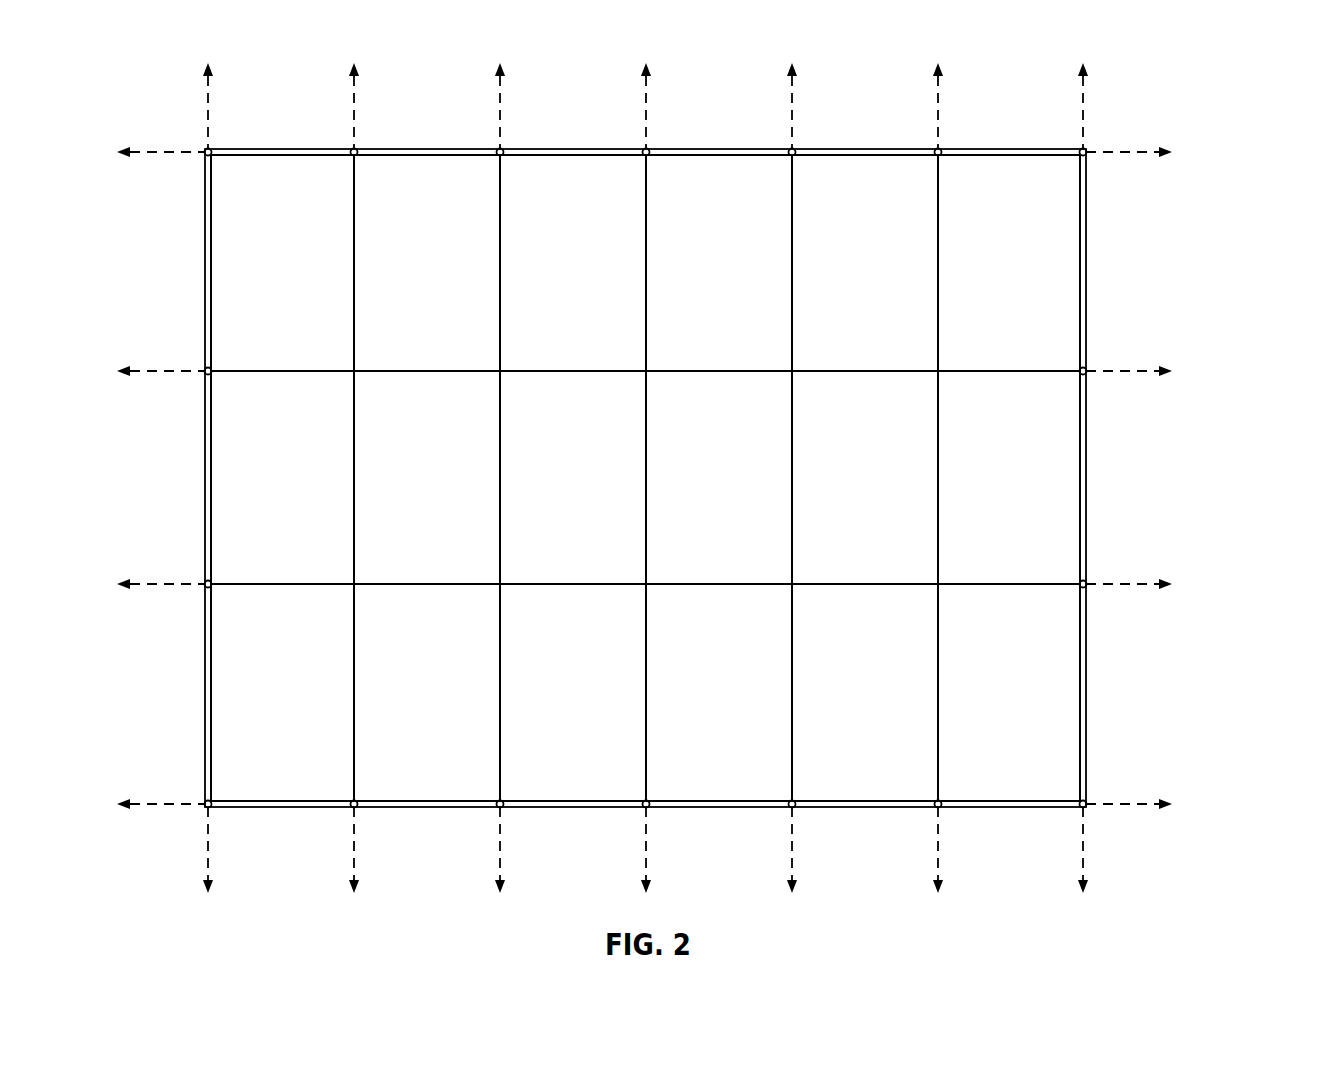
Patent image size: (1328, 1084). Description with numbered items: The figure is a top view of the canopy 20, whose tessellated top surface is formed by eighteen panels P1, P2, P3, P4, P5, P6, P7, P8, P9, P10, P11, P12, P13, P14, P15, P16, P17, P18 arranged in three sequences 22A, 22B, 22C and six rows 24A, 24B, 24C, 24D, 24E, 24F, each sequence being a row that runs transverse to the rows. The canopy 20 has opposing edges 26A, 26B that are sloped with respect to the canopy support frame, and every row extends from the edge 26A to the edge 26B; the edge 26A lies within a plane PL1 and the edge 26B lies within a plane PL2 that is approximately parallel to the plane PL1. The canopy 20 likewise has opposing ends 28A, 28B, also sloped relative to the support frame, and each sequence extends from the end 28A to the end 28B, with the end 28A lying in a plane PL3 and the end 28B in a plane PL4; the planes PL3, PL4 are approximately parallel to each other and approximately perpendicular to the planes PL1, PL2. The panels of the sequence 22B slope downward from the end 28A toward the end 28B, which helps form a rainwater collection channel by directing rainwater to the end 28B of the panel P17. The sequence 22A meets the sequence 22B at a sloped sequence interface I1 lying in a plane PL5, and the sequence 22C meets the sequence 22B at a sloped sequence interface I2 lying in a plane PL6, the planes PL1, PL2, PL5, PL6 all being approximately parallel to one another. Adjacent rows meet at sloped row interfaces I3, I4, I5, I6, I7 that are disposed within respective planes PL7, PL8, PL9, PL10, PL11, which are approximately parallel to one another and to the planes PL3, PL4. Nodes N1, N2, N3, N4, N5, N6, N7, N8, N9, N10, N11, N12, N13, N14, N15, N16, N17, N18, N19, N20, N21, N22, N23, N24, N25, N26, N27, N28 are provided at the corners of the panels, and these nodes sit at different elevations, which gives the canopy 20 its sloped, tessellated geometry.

The canopy 20 is at (1220, 80).
The sequence 22A is at (1120, 250).
The sequence 22B is at (1120, 421).
The sequence 22C is at (1120, 686).
The row 24A is at (998, 128).
The row 24B is at (852, 128).
The row 24C is at (706, 128).
The row 24D is at (560, 128).
The row 24E is at (414, 128).
The row 24F is at (268, 128).
The edge 26A is at (660, 149).
The edge 26B is at (700, 807).
The end 28A is at (1087, 470).
The end 28B is at (205, 477).
The plane PL1 is at (1104, 154).
The plane PL2 is at (1121, 806).
The plane PL3 is at (1085, 108).
The plane PL4 is at (206, 108).
The plane PL5 is at (1105, 369).
The plane PL6 is at (1108, 582).
The plane PL7 is at (940, 848).
The plane PL8 is at (794, 847).
The plane PL9 is at (644, 848).
The plane PL10 is at (498, 848).
The plane PL11 is at (353, 846).
The sequence interface I1 is at (1009, 358).
The sequence interface I2 is at (1009, 573).
The row interface I3 is at (940, 460).
The row interface I4 is at (794, 460).
The row interface I5 is at (648, 460).
The row interface I6 is at (502, 460).
The row interface I7 is at (356, 460).
The panel P1 is at (1028, 277).
The panel P2 is at (1028, 502).
The panel P3 is at (1028, 703).
The panel P4 is at (883, 277).
The panel P5 is at (883, 502).
The panel P6 is at (883, 703).
The panel P7 is at (739, 277).
The panel P8 is at (739, 502).
The panel P9 is at (739, 703).
The panel P10 is at (610, 277).
The panel P11 is at (608, 502).
The panel P12 is at (610, 703).
The panel P13 is at (467, 277).
The panel P14 is at (467, 502).
The panel P15 is at (467, 703).
The panel P16 is at (327, 277).
The panel P17 is at (327, 502).
The panel P18 is at (327, 703).
The node N1 is at (1081, 156).
The node N2 is at (937, 156).
The node N3 is at (791, 156).
The node N4 is at (645, 156).
The node N5 is at (499, 156).
The node N6 is at (353, 156).
The node N7 is at (206, 155).
The node N8 is at (1081, 374).
The node N9 is at (937, 374).
The node N10 is at (791, 374).
The node N11 is at (645, 374).
The node N12 is at (499, 374).
The node N13 is at (353, 374).
The node N14 is at (206, 374).
The node N15 is at (1081, 587).
The node N16 is at (937, 587).
The node N17 is at (791, 587).
The node N18 is at (645, 587).
The node N19 is at (499, 587).
The node N20 is at (353, 587).
The node N21 is at (206, 587).
The node N22 is at (1081, 801).
The node N23 is at (937, 801).
The node N24 is at (791, 801).
The node N25 is at (645, 801).
The node N26 is at (499, 801).
The node N27 is at (353, 801).
The node N28 is at (206, 801).